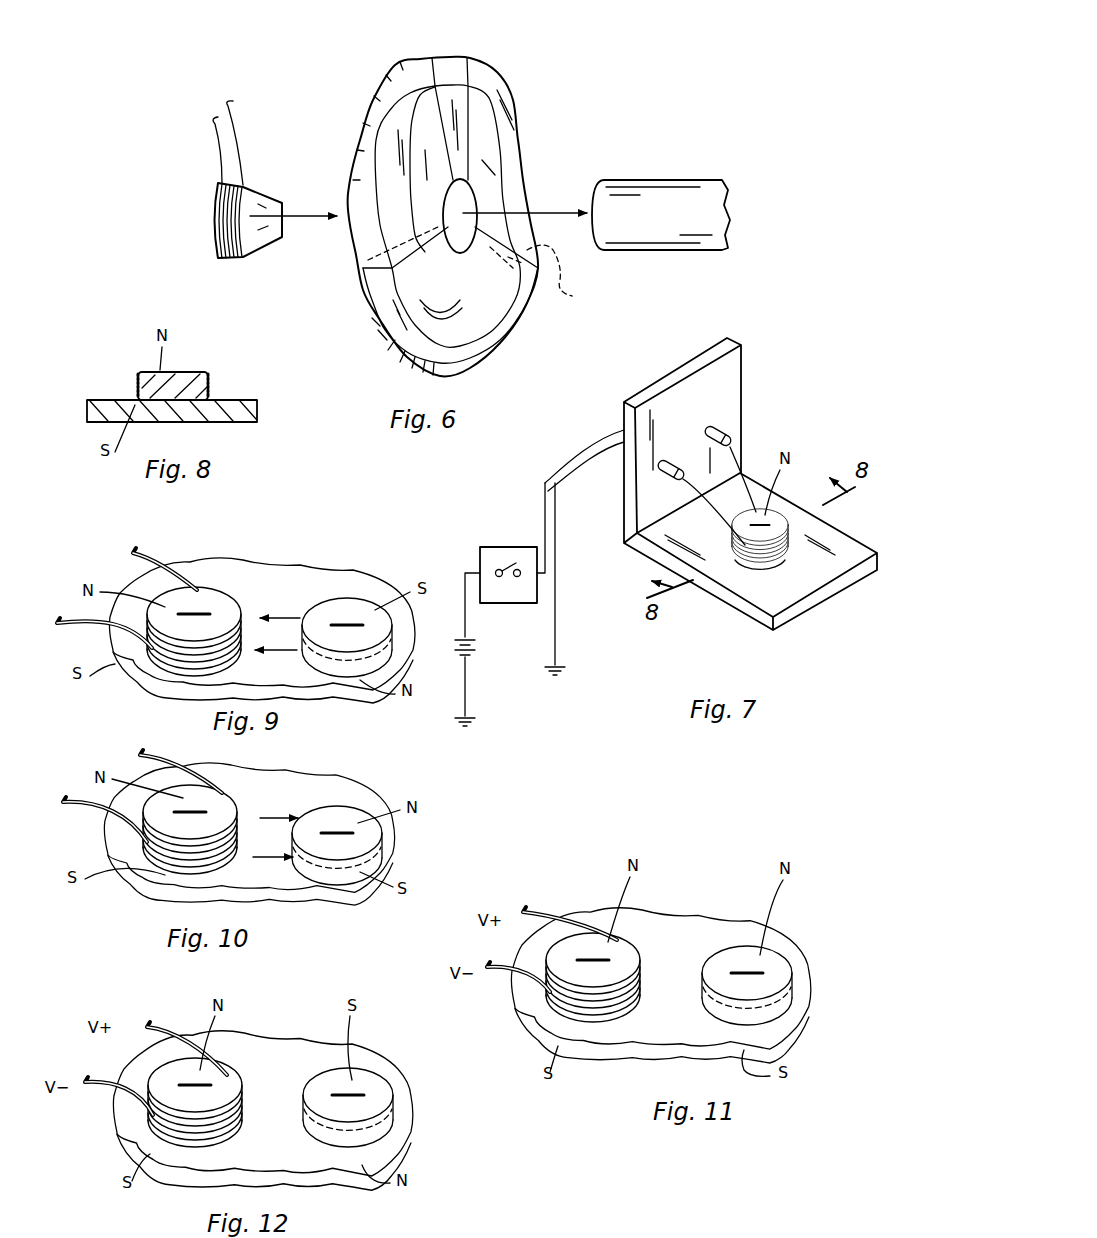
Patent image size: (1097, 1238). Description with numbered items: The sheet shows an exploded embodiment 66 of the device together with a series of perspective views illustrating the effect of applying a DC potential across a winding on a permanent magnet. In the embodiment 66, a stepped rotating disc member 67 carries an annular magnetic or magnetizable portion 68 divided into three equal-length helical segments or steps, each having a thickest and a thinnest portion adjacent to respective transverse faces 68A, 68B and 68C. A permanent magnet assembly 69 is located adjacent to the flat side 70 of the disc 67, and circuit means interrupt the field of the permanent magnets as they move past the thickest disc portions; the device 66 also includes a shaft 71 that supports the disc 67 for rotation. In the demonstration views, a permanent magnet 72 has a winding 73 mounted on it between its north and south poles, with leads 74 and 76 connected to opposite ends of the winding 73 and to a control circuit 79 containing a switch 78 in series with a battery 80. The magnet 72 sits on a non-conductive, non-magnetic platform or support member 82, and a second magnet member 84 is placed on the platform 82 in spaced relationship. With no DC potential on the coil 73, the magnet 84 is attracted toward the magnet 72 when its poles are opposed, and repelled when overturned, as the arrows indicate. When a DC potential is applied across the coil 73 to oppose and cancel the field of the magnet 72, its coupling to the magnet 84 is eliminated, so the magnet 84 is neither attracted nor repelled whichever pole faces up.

In FIG. 6, the embodiment of the device 66 is at (566, 110).
In FIG. 6, the stepped rotating disc member 67 is at (497, 68).
In FIG. 6, the annular magnetic or magnetizable portion 68 is at (373, 123).
In FIG. 6, the transverse face 68A is at (453, 70).
In FIG. 6, the transverse face 68B is at (365, 270).
In FIG. 6, the transverse face 68C is at (488, 265).
In FIG. 6, the permanent magnet assembly 69 is at (264, 183).
In FIG. 6, the flat side of the disc 70 is at (378, 345).
In FIG. 6, the shaft 71 is at (667, 197).
In FIG. 8, the permanent magnet 72 is at (190, 378).
In FIG. 7, the permanent magnet 72 is at (767, 535).
In FIG. 9, the permanent magnet 72 is at (191, 598).
In FIG. 11, the permanent magnet 72 is at (630, 950).
In FIG. 8, the winding 73 is at (210, 383).
In FIG. 7, the winding 73 is at (754, 563).
In FIG. 9, the winding 73 is at (246, 612).
In FIG. 11, the winding 73 is at (628, 1022).
In FIG. 7, the lead 74 is at (672, 464).
In FIG. 7, the lead 76 is at (745, 470).
In FIG. 7, the switch 78 is at (506, 556).
In FIG. 7, the timer or control circuit 79 is at (528, 605).
In FIG. 7, the battery 80 is at (478, 641).
In FIG. 8, the platform or support member 82 is at (258, 408).
In FIG. 7, the platform or support member 82 is at (830, 538).
In FIG. 9, the platform or support member 82 is at (285, 575).
In FIG. 10, the platform or support member 82 is at (295, 888).
In FIG. 9, the second magnet member 84 is at (345, 607).
In FIG. 10, the second magnet member 84 is at (340, 820).